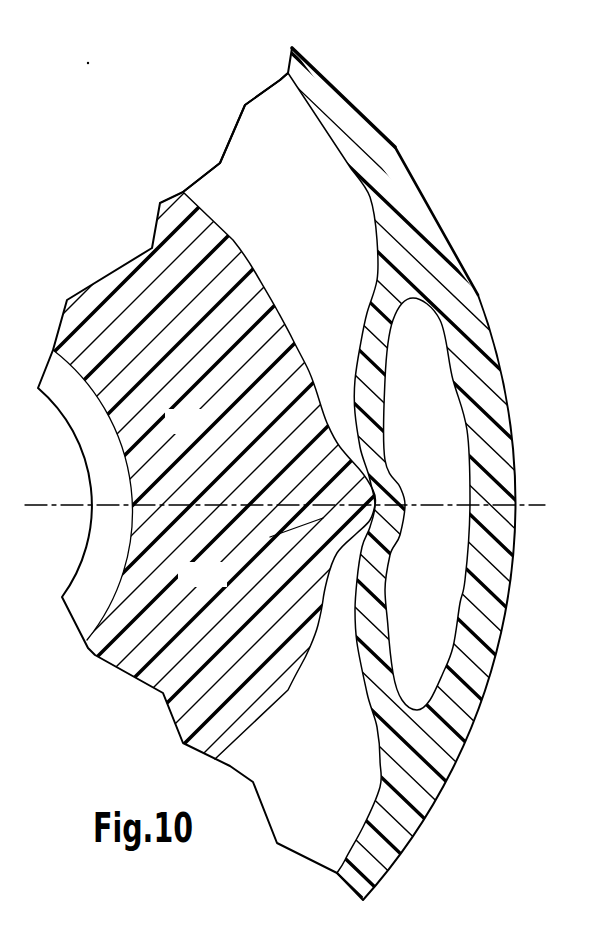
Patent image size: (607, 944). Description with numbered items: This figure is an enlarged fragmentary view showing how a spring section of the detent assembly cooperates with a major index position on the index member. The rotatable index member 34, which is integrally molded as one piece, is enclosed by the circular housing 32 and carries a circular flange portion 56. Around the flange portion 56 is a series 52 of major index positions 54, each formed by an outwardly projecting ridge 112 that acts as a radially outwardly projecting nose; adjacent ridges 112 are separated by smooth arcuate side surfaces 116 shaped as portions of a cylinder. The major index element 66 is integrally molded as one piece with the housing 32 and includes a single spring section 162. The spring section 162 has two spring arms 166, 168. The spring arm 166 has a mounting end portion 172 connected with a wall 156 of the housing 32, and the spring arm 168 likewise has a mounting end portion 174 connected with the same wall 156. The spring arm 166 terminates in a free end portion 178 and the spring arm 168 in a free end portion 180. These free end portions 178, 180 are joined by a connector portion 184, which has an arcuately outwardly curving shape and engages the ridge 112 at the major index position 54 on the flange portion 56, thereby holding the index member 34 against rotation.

The housing 32 is at (398, 146).
The index member 34 is at (89, 284).
The series of major index positions 52 is at (335, 423).
The major index position 54 is at (370, 497).
The circular flange portion 56 is at (148, 273).
The major index element 66 is at (392, 423).
The ridge 112 is at (350, 509).
The side surface 116 is at (233, 240).
The wall 156 is at (390, 823).
The spring section 162 is at (388, 613).
The spring arm 166 is at (395, 342).
The spring arm 168 is at (386, 640).
The mounting end portion 172 is at (410, 307).
The mounting end portion 174 is at (383, 717).
The free end portion 178 is at (377, 462).
The free end portion 180 is at (377, 527).
The connector portion 184 is at (403, 498).